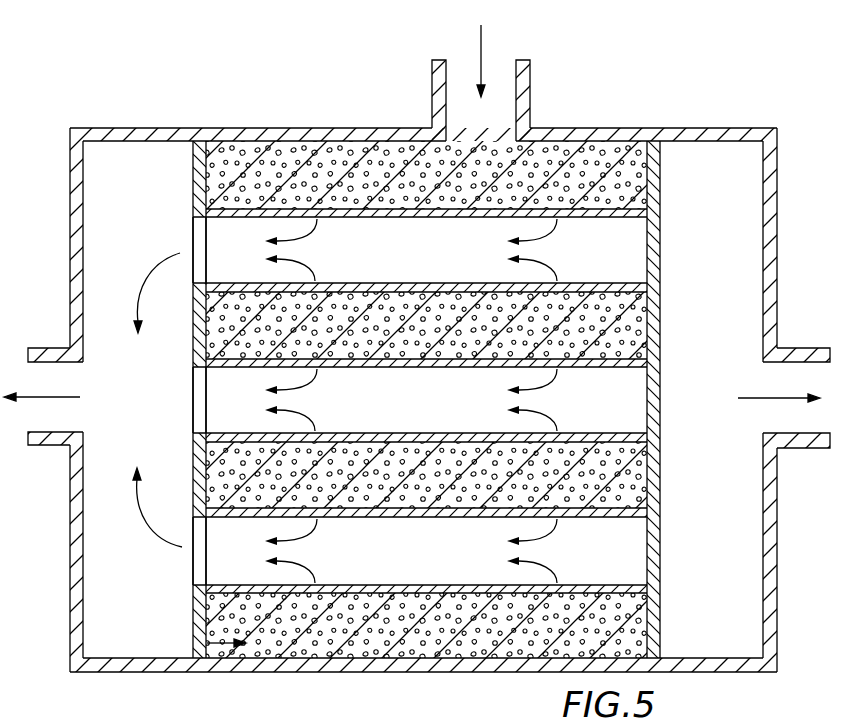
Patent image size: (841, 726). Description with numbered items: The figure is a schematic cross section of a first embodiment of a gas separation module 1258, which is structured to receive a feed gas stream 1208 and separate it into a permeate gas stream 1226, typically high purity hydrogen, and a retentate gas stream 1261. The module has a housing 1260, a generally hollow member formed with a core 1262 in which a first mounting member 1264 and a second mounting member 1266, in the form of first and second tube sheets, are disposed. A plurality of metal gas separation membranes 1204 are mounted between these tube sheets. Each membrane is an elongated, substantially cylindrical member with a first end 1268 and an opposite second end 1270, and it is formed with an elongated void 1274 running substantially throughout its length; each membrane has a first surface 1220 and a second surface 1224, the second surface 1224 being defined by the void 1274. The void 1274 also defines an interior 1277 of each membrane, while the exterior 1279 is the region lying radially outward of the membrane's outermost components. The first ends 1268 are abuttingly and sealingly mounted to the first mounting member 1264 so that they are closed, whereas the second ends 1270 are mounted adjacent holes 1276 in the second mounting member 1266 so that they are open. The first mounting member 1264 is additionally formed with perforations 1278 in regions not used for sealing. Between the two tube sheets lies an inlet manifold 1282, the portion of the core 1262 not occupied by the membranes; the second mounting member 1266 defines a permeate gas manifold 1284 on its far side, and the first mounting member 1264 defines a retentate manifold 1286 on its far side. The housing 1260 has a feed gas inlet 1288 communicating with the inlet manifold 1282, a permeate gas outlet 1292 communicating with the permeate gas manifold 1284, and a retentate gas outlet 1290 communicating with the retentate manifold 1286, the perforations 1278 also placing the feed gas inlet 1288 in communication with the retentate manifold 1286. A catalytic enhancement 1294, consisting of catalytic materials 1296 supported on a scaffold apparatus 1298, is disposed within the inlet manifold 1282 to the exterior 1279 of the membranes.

The metal gas separation membrane 1204 is at (241, 206).
The feed gas stream 1208 is at (481, 48).
The first surface 1220 is at (391, 210).
The second surface 1224 is at (492, 217).
The permeate gas stream 1226 is at (48, 397).
The gas separation module 1258 is at (236, 112).
The housing 1260 is at (351, 124).
The retentate gas stream 1261 is at (781, 400).
The core 1262 is at (723, 258).
The first mounting member 1264 is at (660, 388).
The second mounting member 1266 is at (196, 618).
The first end 1268 is at (660, 225).
The second end 1270 is at (208, 218).
The void 1274 is at (425, 272).
The holes 1276 is at (199, 220).
The interior 1277 is at (617, 250).
The perforations 1278 is at (660, 332).
The exterior 1279 is at (493, 442).
The inlet manifold 1282 is at (547, 141).
The permeate gas manifold 1284 is at (154, 170).
The retentate manifold 1286 is at (718, 170).
The feed gas inlet 1288 is at (517, 80).
The retentate gas outlet 1290 is at (806, 364).
The permeate gas outlet 1292 is at (45, 365).
The catalytic enhancement 1294 is at (207, 643).
The catalytic materials 1296 is at (324, 657).
The scaffold apparatus 1298 is at (378, 657).